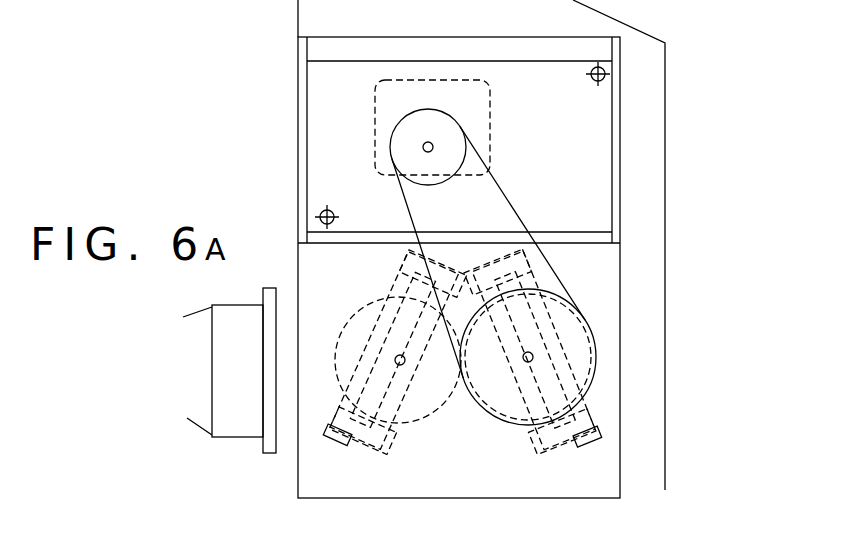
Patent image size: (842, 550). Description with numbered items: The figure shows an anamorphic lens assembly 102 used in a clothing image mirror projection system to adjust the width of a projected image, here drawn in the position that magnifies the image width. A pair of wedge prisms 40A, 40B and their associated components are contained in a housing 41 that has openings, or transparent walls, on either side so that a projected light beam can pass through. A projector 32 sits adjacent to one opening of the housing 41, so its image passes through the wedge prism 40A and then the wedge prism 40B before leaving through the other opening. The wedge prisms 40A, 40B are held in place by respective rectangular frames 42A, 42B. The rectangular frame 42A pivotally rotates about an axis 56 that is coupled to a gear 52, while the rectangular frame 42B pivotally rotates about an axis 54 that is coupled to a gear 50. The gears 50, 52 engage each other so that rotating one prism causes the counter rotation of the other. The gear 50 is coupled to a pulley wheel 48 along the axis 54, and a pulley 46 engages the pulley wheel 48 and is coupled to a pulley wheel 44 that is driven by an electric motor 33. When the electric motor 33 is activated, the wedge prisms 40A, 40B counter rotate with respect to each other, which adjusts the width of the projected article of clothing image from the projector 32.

The anamorphic lens assembly 102 is at (678, 113).
The housing 41 is at (459, 267).
The projector 32 is at (246, 384).
The electric motor 33 is at (377, 102).
The pulley wheel 44 is at (390, 140).
The pulley 46 is at (403, 190).
The wedge prism 40A is at (353, 455).
The rectangular frame 42A is at (328, 423).
The gear 52 is at (350, 318).
The axis 56 is at (400, 354).
The wedge prism 40B is at (583, 405).
The rectangular frame 42B is at (603, 422).
The pulley wheel 48 is at (596, 340).
The gear 50 is at (592, 363).
The axis 54 is at (530, 352).